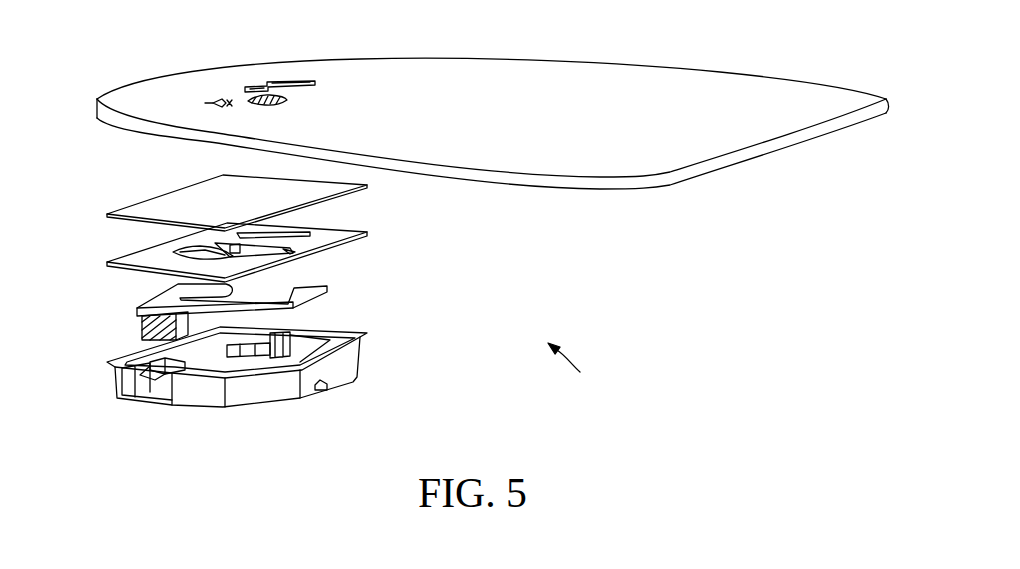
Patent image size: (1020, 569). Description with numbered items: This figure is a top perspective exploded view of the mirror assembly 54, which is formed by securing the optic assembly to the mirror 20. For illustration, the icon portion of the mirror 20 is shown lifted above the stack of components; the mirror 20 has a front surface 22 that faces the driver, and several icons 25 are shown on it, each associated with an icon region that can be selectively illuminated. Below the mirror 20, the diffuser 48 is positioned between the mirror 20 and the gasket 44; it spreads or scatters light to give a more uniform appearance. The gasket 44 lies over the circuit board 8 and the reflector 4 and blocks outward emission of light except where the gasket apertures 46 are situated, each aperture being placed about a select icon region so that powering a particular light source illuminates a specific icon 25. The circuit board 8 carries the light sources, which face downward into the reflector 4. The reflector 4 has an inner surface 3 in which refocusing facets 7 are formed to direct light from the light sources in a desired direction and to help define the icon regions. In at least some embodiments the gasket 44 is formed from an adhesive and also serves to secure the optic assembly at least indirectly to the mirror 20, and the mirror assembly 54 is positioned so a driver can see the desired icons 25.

The mirror 20 is at (97, 107).
The front surface 22 is at (497, 72).
The icon 25 is at (213, 103).
The diffuser 48 is at (138, 208).
The gasket 44 is at (138, 257).
The gasket aperture 46 is at (287, 250).
The circuit board 8 is at (147, 305).
The refocusing facets 7 is at (150, 367).
The inner surface 3 is at (240, 363).
The reflector 4 is at (192, 398).
The mirror assembly 54 is at (583, 366).